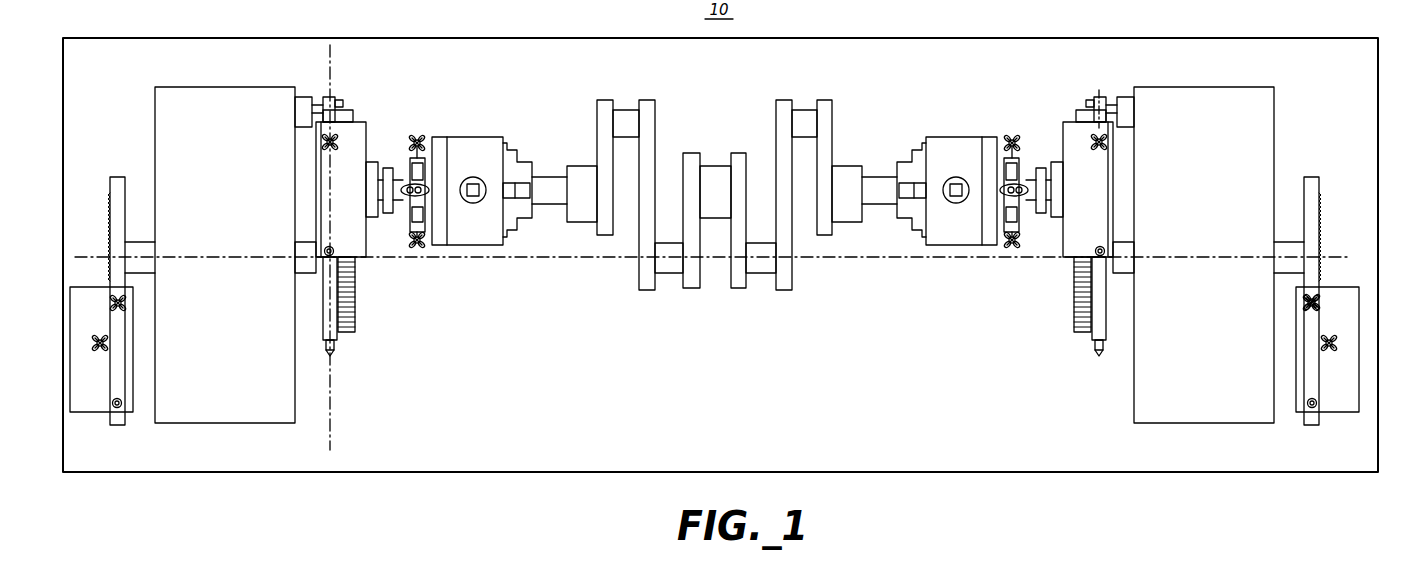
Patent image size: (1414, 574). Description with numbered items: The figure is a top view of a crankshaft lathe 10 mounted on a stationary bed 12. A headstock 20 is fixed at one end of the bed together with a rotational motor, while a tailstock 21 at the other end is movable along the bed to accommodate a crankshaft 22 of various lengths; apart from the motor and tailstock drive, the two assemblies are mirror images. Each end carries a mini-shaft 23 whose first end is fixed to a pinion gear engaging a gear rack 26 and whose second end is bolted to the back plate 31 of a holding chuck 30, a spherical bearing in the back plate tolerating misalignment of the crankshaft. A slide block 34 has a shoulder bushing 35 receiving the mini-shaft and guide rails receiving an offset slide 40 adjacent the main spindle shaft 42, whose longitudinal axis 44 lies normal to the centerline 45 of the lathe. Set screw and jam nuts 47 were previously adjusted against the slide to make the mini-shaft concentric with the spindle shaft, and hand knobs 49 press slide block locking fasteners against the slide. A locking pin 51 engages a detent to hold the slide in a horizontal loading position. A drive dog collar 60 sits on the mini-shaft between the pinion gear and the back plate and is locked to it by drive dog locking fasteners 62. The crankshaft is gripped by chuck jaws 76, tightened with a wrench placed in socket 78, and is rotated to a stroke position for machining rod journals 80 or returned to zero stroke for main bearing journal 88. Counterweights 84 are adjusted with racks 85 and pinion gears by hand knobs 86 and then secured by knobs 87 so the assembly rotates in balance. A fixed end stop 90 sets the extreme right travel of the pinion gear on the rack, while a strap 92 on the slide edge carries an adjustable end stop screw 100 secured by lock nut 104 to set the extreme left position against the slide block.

The crankshaft lathe 10 is at (735, 278).
The stationary bed 12 is at (568, 473).
The headstock 20 is at (155, 128).
The tailstock 21 is at (1277, 125).
The crankshaft 22 is at (726, 208).
The mini-shaft 23 is at (405, 207).
The gear rack 26 is at (355, 318).
The holding chuck 30 is at (714, 200).
The back plate 31 is at (437, 247).
The slide block 34 is at (366, 122).
The shoulder bushing 35 is at (1047, 165).
The offset slide 40 is at (338, 337).
The main spindle shaft 42 is at (310, 273).
The longitudinal axis 44 is at (217, 257).
The centerline 45 is at (333, 397).
The set screw and jam nuts 47 is at (327, 250).
The hand knob 49 is at (336, 143).
The locking pin 51 is at (323, 95).
The drive dog collar 60 is at (1020, 215).
The drive dog locking fastener 62 is at (1033, 150).
The chuck jaws 76 is at (910, 227).
The socket 78 is at (955, 200).
The rod journal 80 is at (667, 277).
The counterweight 84 is at (103, 297).
The rack 85 is at (110, 200).
The hand knob 86 is at (1314, 302).
The knob 87 is at (100, 345).
The main bearing journal 88 is at (712, 166).
The fixed position end stop 90 is at (344, 100).
The strap 92 is at (338, 348).
The adjustable end stop screw 100 is at (1097, 352).
The lock nut 104 is at (1088, 328).